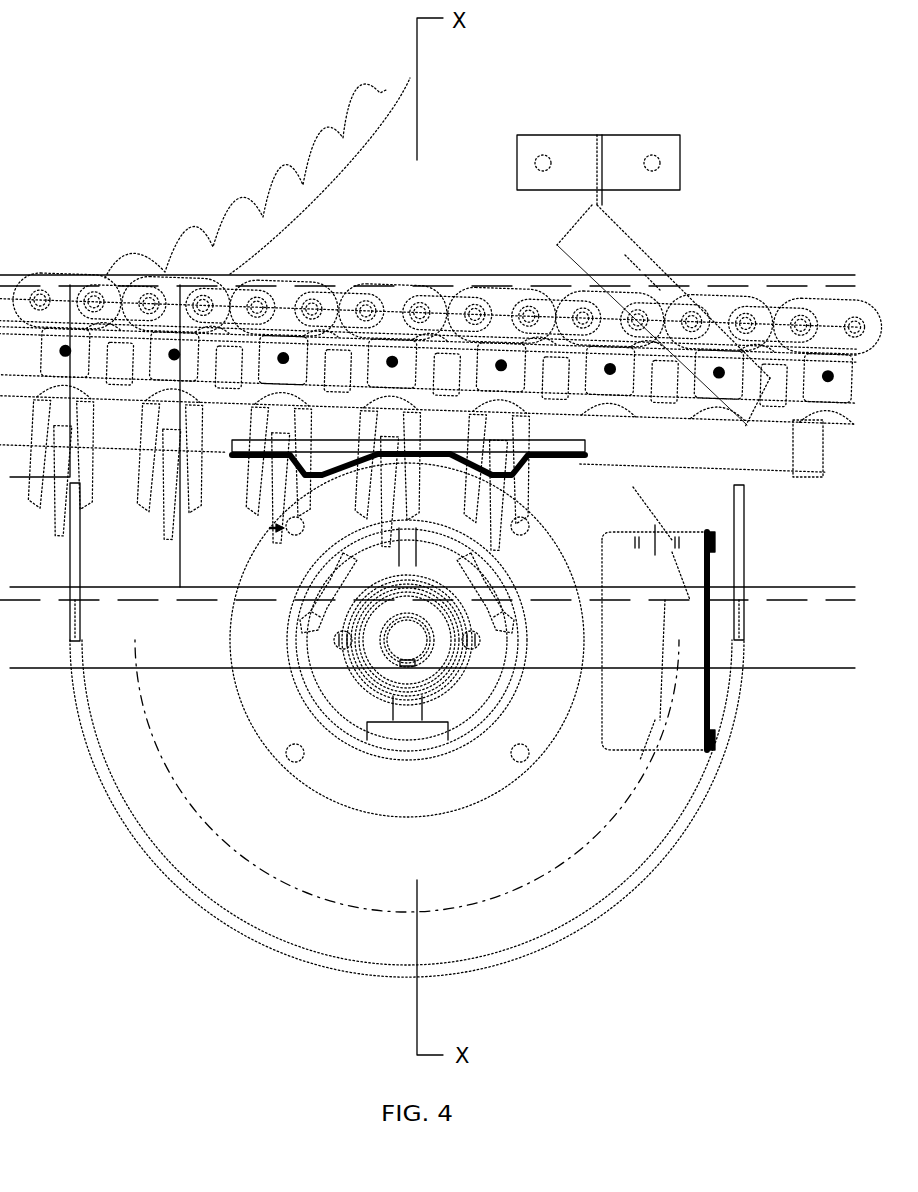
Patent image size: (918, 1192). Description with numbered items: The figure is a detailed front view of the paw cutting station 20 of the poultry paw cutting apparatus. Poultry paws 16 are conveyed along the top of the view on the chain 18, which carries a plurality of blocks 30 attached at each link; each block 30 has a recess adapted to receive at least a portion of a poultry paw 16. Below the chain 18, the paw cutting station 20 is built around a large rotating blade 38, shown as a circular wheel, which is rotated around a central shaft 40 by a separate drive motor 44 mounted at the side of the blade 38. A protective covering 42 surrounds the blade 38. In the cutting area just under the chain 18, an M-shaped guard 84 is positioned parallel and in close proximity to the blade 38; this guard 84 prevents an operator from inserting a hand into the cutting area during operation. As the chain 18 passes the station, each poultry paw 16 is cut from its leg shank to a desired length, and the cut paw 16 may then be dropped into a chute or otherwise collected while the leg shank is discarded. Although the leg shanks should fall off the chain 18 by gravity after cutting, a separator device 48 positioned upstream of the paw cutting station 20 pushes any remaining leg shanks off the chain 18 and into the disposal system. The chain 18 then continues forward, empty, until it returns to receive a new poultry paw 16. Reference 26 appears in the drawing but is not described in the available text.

The poultry paw 16 is at (502, 423).
The chain 18 is at (405, 278).
The paw cutting station 20 is at (434, 720).
The sprocket 26 is at (257, 178).
The block 30 is at (787, 385).
The rotating blade 38 is at (632, 790).
The shaft 40 is at (408, 640).
The protective covering 42 is at (132, 820).
The drive motor 44 is at (683, 708).
The separator device 48 is at (623, 258).
The M-shaped guard 84 is at (556, 447).